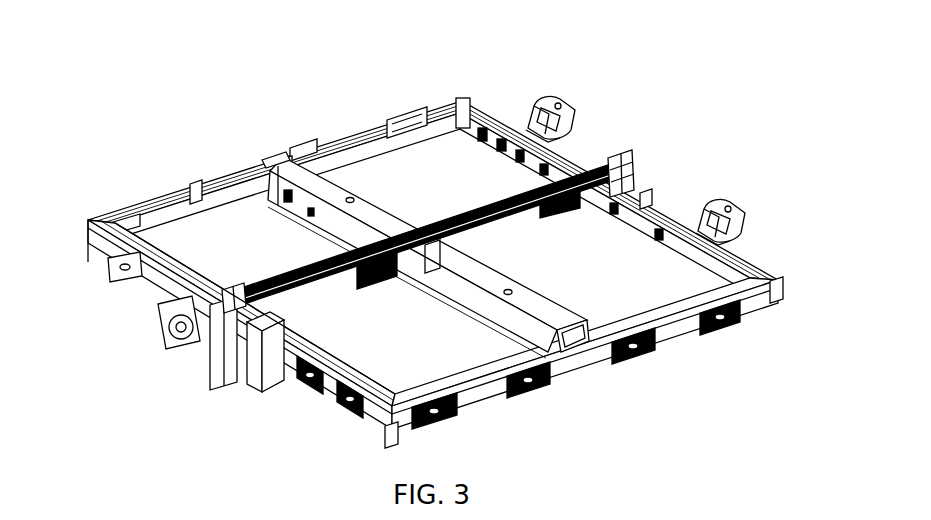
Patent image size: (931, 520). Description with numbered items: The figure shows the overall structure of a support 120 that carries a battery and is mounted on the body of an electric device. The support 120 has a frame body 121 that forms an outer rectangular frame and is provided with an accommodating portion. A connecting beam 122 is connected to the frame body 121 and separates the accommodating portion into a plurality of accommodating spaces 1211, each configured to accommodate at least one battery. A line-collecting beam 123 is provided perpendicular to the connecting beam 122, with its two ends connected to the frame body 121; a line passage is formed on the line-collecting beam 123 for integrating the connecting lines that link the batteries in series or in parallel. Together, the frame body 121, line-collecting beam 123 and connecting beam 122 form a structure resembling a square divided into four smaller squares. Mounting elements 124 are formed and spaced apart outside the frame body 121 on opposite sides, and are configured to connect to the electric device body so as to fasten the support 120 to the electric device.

The support 120 is at (421, 21).
The frame body 121 is at (500, 393).
The accommodating space 1211 is at (388, 352).
The connecting beam 122 is at (530, 307).
The line-collecting beam 123 is at (430, 220).
The mounting element 124 is at (560, 108).